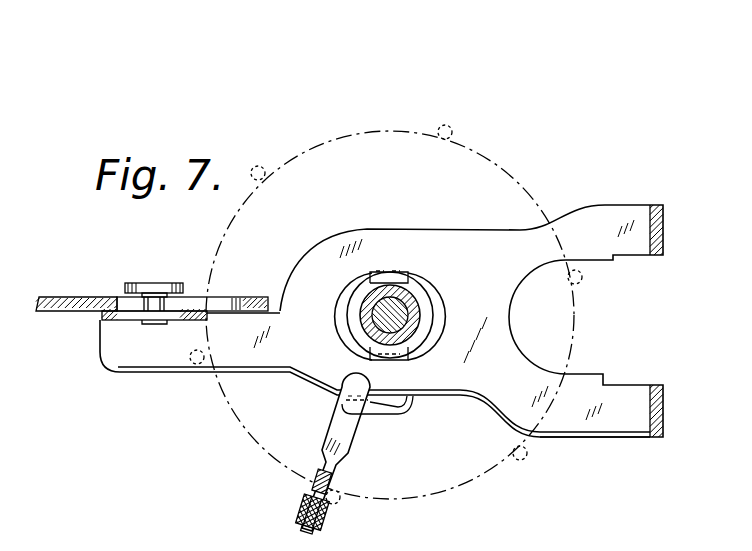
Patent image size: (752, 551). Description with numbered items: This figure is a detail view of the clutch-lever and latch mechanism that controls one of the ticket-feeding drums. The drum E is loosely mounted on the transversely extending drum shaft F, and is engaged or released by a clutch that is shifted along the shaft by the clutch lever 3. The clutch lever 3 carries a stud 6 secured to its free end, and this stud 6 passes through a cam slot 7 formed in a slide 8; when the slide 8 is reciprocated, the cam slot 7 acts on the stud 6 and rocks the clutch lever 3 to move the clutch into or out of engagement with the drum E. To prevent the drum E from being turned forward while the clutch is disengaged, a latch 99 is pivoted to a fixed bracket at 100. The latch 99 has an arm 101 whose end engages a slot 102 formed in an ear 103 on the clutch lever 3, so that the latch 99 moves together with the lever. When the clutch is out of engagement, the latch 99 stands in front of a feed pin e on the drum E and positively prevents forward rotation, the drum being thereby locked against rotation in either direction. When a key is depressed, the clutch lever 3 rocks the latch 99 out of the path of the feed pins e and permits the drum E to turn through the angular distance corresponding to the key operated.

The clutch lever 3 is at (462, 232).
The stud 6 is at (147, 283).
The cam slot 7 is at (224, 297).
The slide 8 is at (82, 295).
The drum E is at (572, 262).
The drum shaft F is at (410, 303).
The feed pin e is at (452, 132).
The latch 99 is at (329, 520).
The pivot on fixed bracket 100 is at (298, 503).
The arm 101 is at (336, 422).
The slot 102 is at (378, 398).
The ear 103 is at (375, 410).